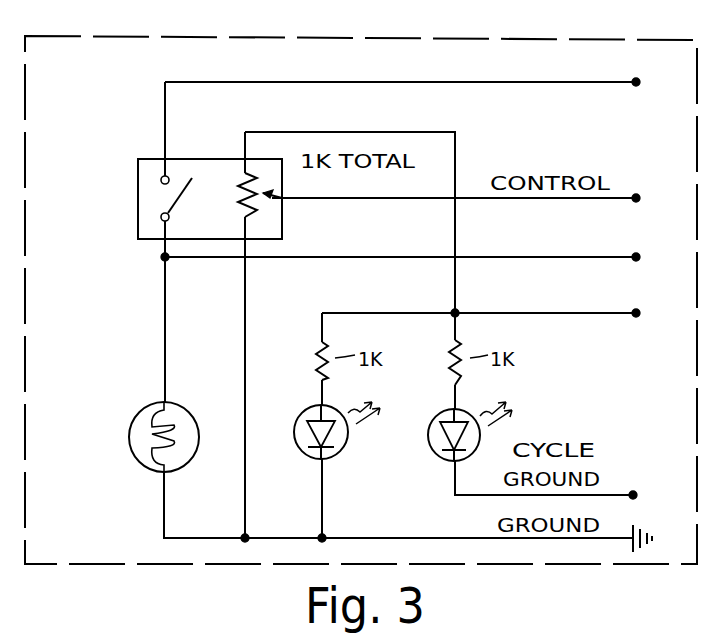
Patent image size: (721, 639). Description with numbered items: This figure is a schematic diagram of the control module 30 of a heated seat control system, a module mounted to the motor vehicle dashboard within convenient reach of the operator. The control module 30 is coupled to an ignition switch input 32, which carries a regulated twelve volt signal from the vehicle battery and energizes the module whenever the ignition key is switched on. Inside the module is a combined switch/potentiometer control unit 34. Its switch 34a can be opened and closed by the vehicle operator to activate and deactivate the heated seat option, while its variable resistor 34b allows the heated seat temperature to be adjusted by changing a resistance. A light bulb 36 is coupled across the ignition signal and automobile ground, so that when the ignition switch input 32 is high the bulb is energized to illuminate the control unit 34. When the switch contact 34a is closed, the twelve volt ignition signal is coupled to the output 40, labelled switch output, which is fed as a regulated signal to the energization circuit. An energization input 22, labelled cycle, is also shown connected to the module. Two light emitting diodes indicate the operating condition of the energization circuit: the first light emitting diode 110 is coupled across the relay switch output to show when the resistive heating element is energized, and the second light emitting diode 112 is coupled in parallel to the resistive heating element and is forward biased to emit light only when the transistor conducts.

The control module 30 is at (90, 352).
The output 40 is at (500, 85).
The combined switch/potentiometer control unit 34 is at (138, 203).
The switch 34a is at (187, 206).
The variable resistor 34b is at (256, 203).
The ignition switch input 32 is at (615, 256).
The energization input 22 is at (578, 314).
The light bulb 36 is at (170, 404).
The first light emitting diode 110 is at (337, 456).
The second light emitting diode 112 is at (481, 438).